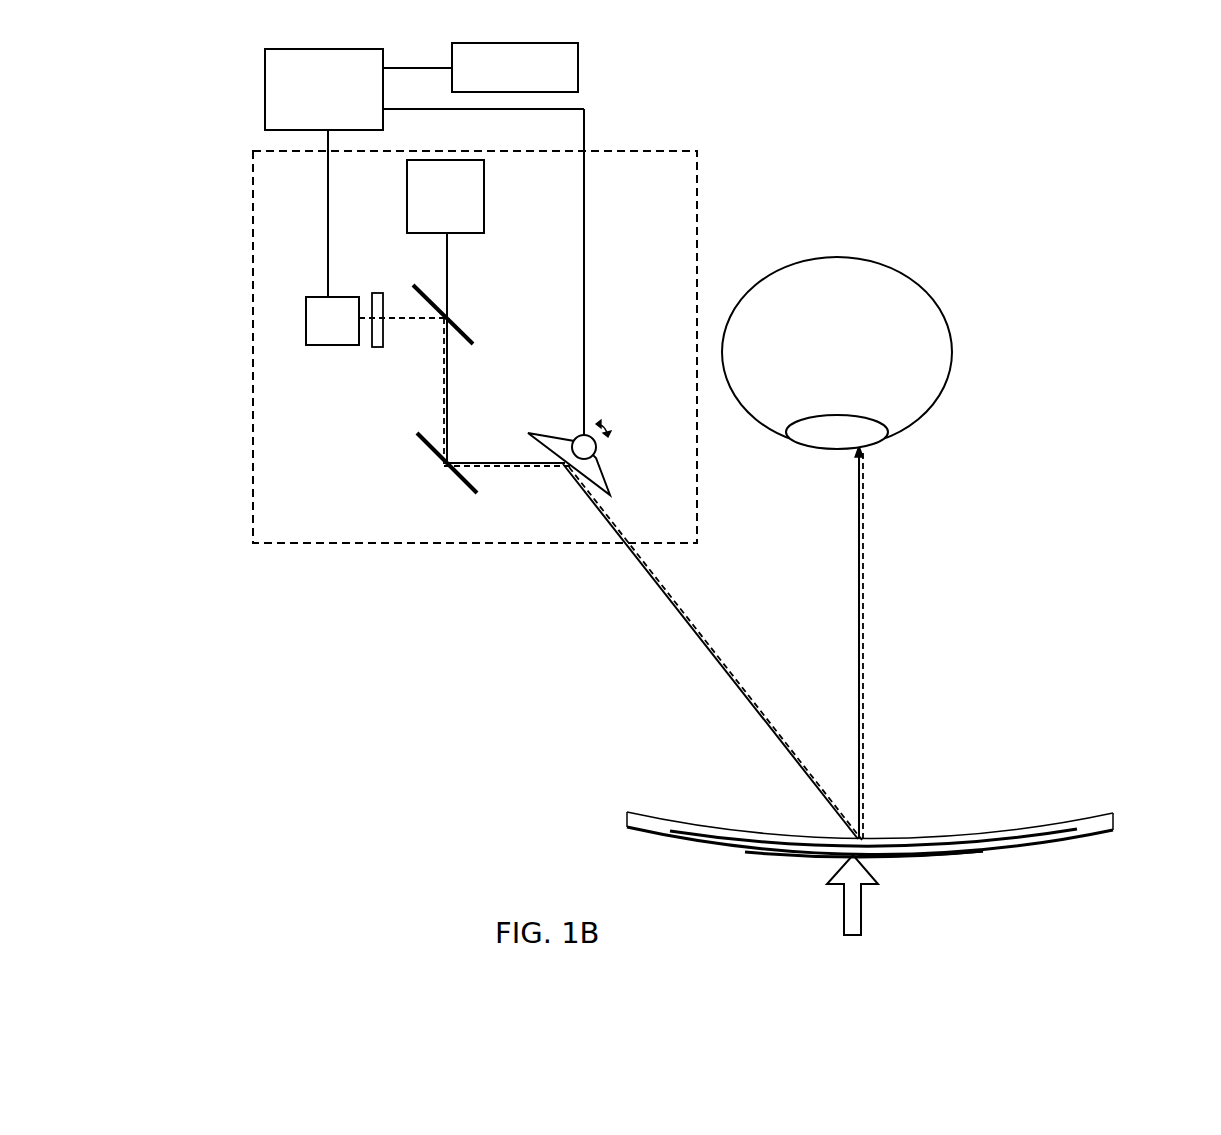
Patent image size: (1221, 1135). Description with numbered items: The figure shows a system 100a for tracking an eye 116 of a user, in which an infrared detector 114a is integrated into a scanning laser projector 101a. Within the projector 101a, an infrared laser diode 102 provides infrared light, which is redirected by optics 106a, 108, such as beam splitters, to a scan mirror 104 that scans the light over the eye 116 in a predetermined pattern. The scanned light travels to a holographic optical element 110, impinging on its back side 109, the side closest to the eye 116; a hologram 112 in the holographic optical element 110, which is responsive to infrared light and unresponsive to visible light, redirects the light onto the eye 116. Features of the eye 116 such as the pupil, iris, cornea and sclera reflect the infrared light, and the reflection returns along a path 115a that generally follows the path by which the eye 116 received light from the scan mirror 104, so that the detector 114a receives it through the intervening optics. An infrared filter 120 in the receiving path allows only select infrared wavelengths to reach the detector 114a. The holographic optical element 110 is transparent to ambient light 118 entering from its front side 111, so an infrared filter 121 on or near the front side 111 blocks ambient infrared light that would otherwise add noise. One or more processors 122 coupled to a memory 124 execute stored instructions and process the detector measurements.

The system 100a is at (752, 155).
The scanning laser projector 101a is at (638, 150).
The infrared laser diode 102 is at (484, 203).
The scan mirror 104 is at (600, 474).
The optics 106a is at (468, 333).
The optics 108 is at (463, 488).
The back side 109 is at (1018, 828).
The holographic optical element 110 is at (1115, 820).
The front side 111 is at (753, 853).
The hologram 112 is at (961, 847).
The infrared detector 114a is at (335, 346).
The path 115a is at (717, 653).
The eye 116 is at (932, 347).
The ambient light 118 is at (852, 910).
The infrared filter 120 is at (378, 290).
The infrared filter 121 is at (685, 846).
The processor 122 is at (265, 92).
The memory 124 is at (578, 73).